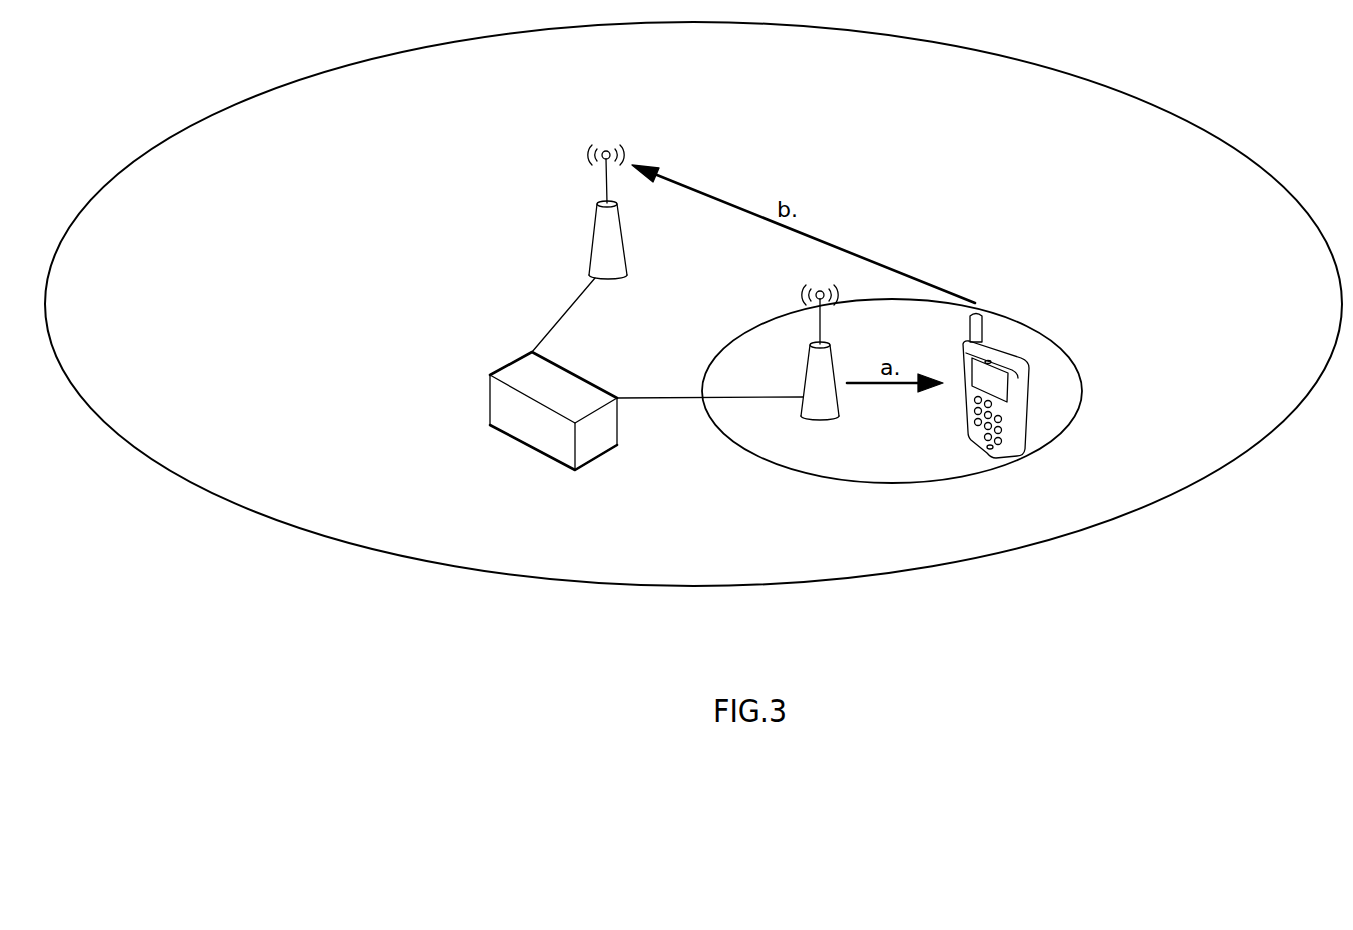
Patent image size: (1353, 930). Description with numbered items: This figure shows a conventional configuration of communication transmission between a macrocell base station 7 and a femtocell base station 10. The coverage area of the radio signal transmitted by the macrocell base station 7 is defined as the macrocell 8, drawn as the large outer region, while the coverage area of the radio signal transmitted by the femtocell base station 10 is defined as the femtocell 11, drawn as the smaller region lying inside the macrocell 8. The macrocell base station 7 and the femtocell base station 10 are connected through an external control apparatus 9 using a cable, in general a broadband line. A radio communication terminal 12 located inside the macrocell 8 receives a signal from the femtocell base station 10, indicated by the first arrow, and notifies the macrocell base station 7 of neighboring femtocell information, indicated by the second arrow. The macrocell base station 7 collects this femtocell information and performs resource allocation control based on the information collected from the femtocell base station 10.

The macrocell base station 7 is at (590, 255).
The macrocell 8 is at (1196, 119).
The external control apparatus 9 is at (500, 432).
The femtocell base station 10 is at (808, 421).
The femtocell 11 is at (1050, 337).
The radio communication terminal 12 is at (1008, 456).